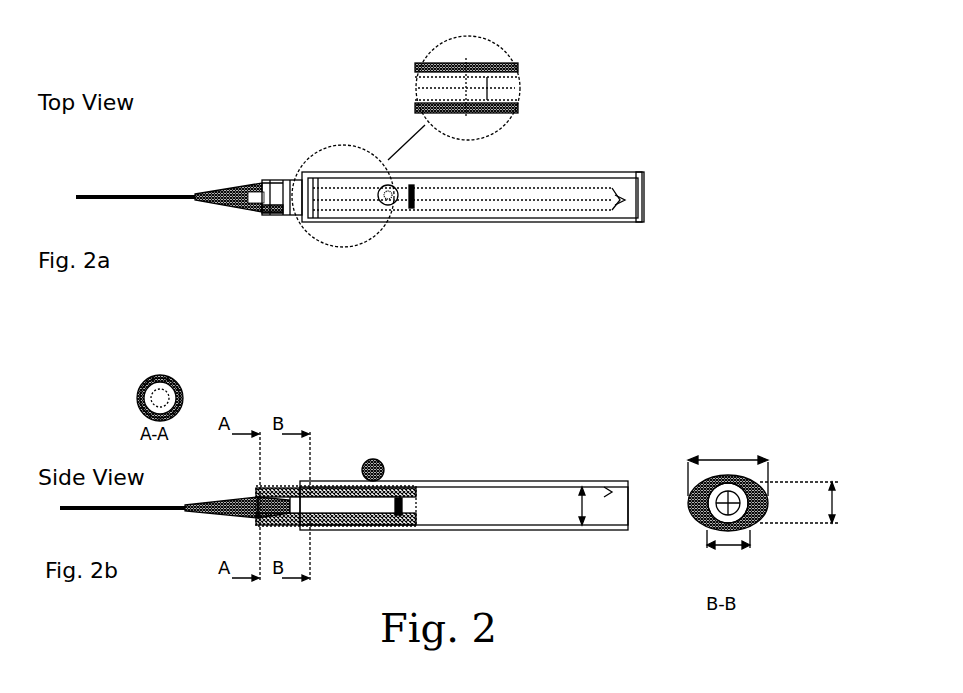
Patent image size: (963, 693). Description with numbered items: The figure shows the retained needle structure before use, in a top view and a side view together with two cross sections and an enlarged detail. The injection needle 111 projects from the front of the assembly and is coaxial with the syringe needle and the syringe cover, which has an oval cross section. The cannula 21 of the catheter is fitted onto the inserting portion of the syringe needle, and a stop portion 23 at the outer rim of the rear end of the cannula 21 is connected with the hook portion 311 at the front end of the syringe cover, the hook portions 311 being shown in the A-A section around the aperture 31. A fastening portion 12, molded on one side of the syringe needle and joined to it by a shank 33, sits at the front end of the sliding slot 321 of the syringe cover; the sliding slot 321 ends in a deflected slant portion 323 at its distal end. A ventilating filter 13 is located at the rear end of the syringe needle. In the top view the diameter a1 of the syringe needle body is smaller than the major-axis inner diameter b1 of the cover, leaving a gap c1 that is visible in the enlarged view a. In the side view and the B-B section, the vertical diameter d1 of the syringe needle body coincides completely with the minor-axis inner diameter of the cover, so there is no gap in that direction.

In FIG. 2A, the injection needle 111 is at (85, 194).
In FIG. 2A, the cannula 21 is at (248, 188).
In FIG. 2A, the hook portion 311 is at (268, 181).
In FIG. 2B, the hook portion 311 is at (156, 378).
In FIG. 2B, the aperture 31 is at (145, 412).
In FIG. 2A, the stop portion 23 is at (270, 206).
In FIG. 2B, the stop portion 23 is at (270, 494).
In FIG. 2A, the sliding slot 321 is at (505, 192).
In FIG. 2B, the sliding slot 321 is at (508, 484).
In FIG. 2A, the slant portion 323 is at (642, 176).
In FIG. 2B, the shank 33 is at (400, 488).
In FIG. 2B, the fastening portion 12 is at (378, 460).
In FIG. 2B, the ventilating filter 13 is at (402, 508).
In FIG. 2A, the enlarged view a is at (330, 150).
In FIG. 2A, the diameter of the body of the syringe needle a1 is at (499, 88).
In FIG. 2B, the diameter of the body of the syringe needle a1 is at (728, 550).
In FIG. 2B, the inner diameter of the syringe cover b1 is at (728, 483).
In FIG. 2A, the gap c1 is at (466, 89).
In FIG. 2B, the diameter of the body of the syringe needle d1 is at (692, 503).